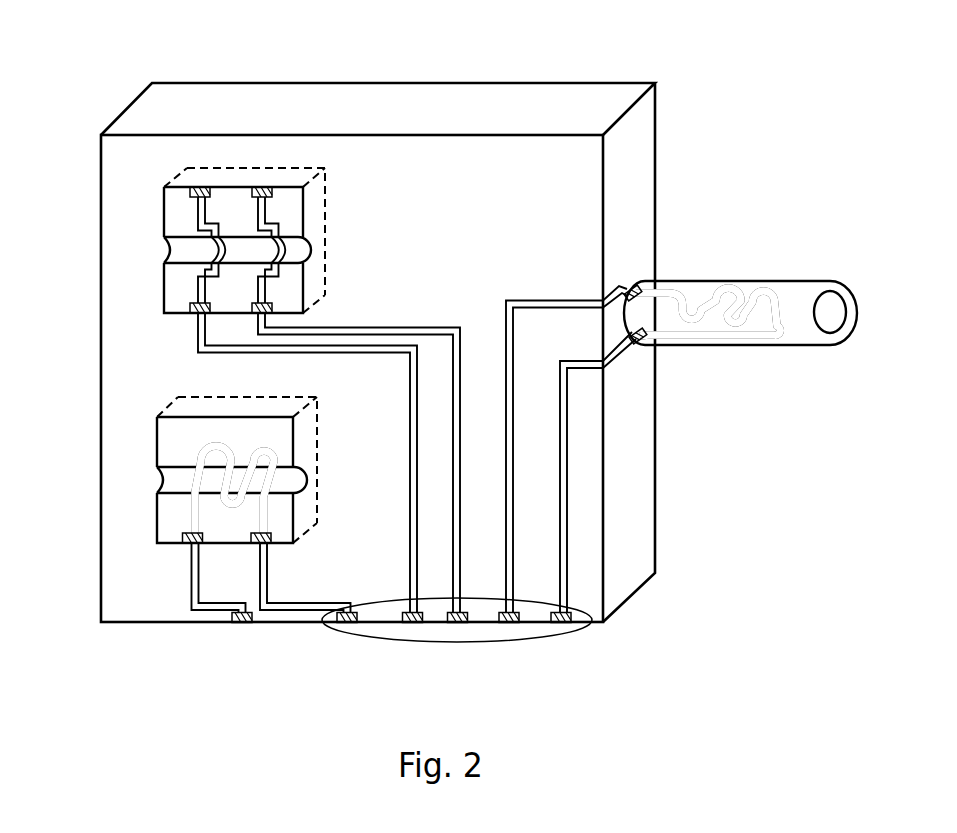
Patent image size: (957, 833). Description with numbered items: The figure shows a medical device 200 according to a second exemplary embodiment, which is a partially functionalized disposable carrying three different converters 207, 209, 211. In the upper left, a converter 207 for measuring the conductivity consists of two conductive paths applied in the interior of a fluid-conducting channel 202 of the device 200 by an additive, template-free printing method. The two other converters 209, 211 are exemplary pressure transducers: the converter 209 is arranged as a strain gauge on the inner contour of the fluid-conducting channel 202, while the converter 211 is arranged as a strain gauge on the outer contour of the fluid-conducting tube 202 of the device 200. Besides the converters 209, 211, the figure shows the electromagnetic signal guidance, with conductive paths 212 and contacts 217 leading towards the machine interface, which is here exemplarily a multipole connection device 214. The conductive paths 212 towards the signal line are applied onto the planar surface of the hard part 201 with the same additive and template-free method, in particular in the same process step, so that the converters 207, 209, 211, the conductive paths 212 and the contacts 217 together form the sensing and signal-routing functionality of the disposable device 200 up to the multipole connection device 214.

The medical device 200 is at (726, 139).
The hard part 201 is at (456, 241).
The fluid-conducting channel 202 is at (178, 253).
The converter for measuring the conductivity 207 is at (292, 250).
The converter 209 is at (188, 477).
The converter 211 is at (747, 287).
The conductive paths 212 is at (209, 201).
The multipole connection device 214 is at (542, 637).
The contact 217 is at (263, 190).